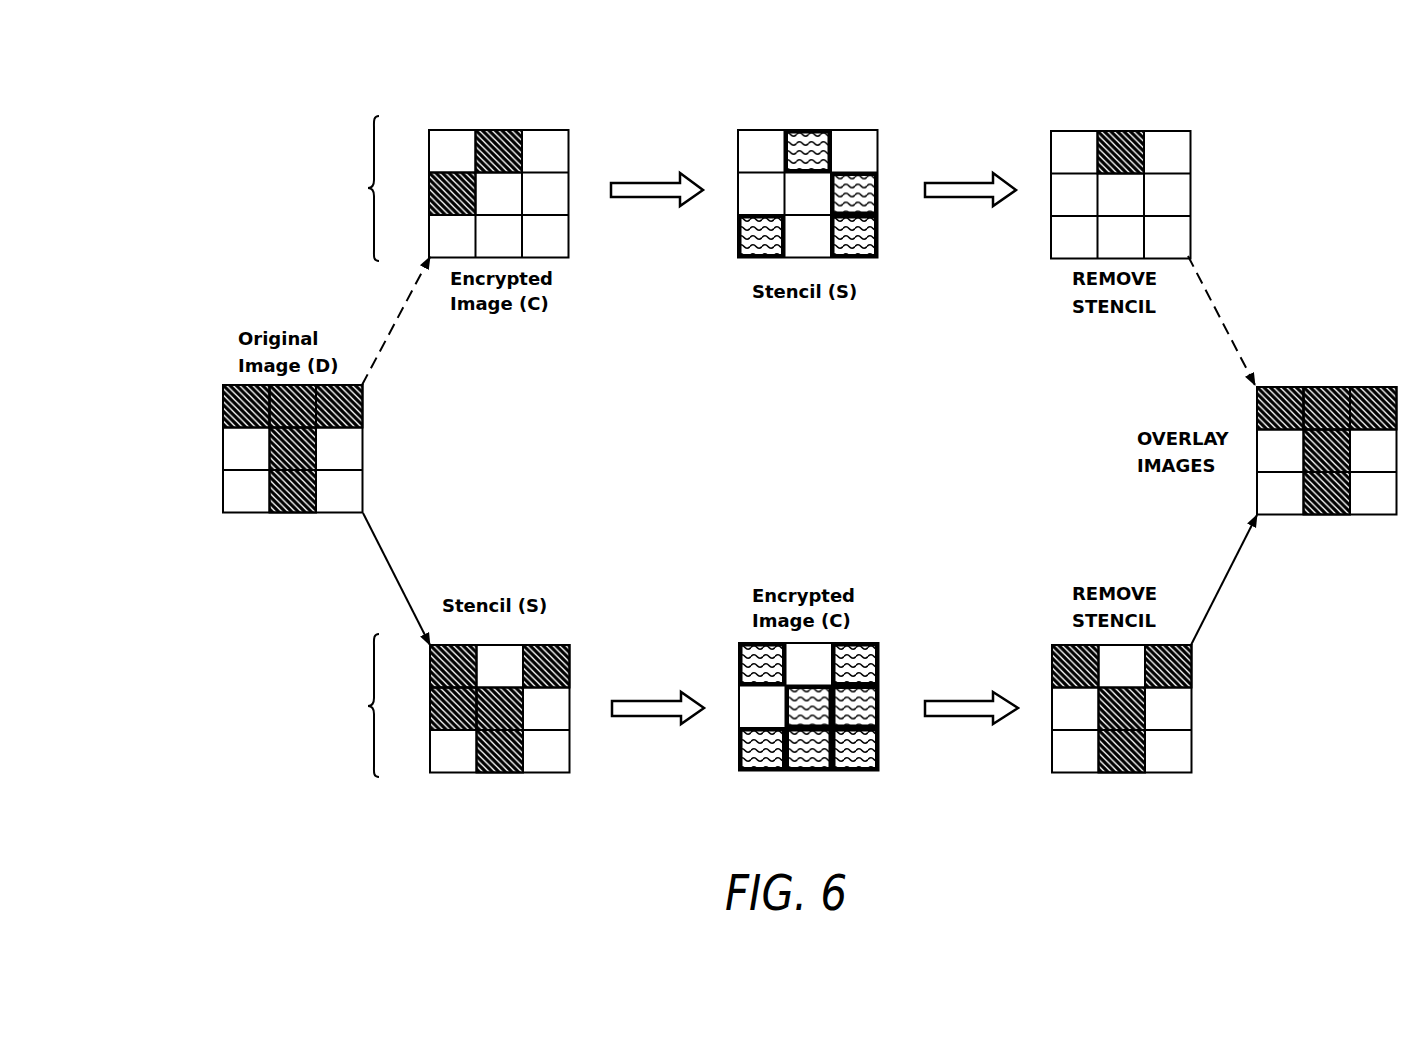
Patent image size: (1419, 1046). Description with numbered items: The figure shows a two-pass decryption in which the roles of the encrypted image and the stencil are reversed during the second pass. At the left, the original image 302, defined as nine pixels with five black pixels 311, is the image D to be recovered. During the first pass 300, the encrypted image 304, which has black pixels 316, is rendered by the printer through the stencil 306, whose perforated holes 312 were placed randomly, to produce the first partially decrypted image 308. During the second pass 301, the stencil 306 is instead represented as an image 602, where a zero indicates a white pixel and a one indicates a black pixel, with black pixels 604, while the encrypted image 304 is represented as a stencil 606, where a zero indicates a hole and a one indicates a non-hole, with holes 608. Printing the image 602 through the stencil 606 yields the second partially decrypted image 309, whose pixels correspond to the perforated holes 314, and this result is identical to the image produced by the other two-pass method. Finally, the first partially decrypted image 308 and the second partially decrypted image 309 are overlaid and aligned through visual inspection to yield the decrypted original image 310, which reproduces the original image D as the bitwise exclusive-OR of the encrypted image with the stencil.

The first pass 300 is at (372, 138).
The second pass 301 is at (372, 672).
The original image 302 is at (315, 456).
The encrypted image 304 is at (507, 169).
The stencil 306 is at (862, 128).
The first partially decrypted image 308 is at (1175, 128).
The second partially decrypted image 309 is at (1141, 716).
The decrypted original image 310 is at (1315, 386).
The black pixels 311 is at (225, 405).
The perforated holes 312 is at (805, 133).
The perforated holes 314 is at (1052, 668).
The black pixels 316 is at (493, 130).
The image of the stencil 602 is at (524, 712).
The black pixels 604 is at (430, 700).
The stencil of the encrypted image 606 is at (834, 710).
The holes 608 is at (790, 715).